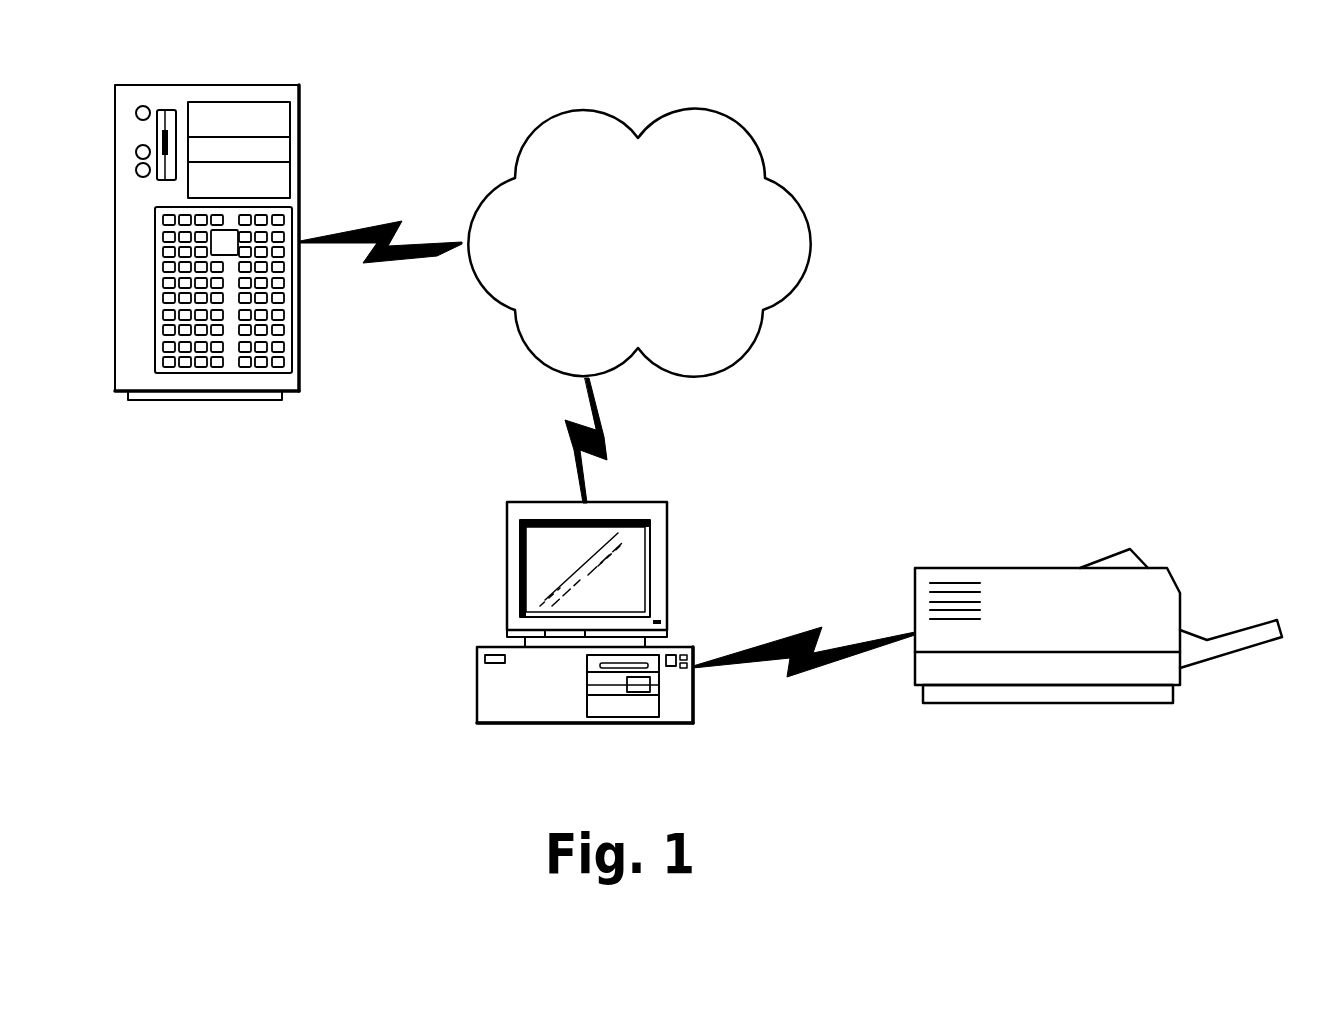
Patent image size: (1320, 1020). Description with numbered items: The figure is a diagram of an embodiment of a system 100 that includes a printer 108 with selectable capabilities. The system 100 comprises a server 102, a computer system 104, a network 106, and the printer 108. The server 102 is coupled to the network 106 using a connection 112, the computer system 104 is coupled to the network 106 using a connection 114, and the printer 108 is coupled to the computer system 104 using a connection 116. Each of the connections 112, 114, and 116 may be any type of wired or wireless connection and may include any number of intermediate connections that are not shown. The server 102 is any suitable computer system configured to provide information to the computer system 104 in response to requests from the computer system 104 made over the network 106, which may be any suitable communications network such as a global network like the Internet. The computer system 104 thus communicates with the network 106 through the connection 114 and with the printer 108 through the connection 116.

The system 100 is at (332, 636).
The server 102 is at (243, 400).
The computer system 104 is at (643, 723).
The network 106 is at (688, 110).
The printer 108 is at (1072, 703).
The connection 112 is at (376, 263).
The connection 114 is at (605, 438).
The connection 116 is at (803, 676).